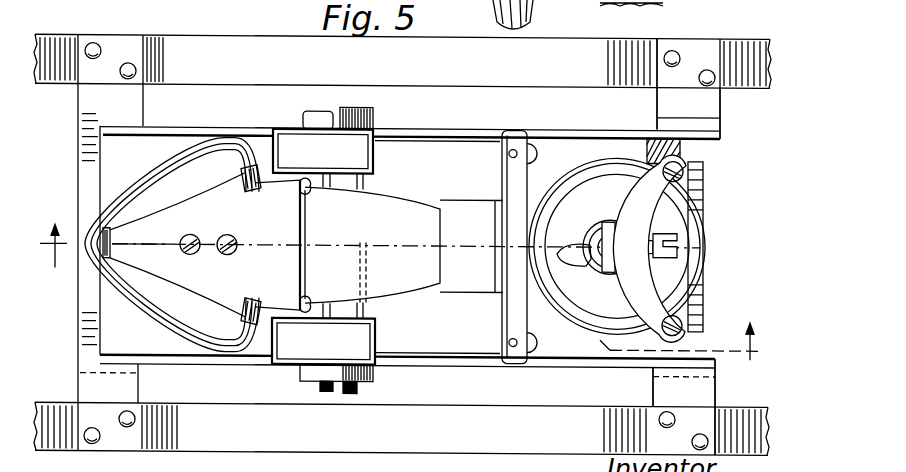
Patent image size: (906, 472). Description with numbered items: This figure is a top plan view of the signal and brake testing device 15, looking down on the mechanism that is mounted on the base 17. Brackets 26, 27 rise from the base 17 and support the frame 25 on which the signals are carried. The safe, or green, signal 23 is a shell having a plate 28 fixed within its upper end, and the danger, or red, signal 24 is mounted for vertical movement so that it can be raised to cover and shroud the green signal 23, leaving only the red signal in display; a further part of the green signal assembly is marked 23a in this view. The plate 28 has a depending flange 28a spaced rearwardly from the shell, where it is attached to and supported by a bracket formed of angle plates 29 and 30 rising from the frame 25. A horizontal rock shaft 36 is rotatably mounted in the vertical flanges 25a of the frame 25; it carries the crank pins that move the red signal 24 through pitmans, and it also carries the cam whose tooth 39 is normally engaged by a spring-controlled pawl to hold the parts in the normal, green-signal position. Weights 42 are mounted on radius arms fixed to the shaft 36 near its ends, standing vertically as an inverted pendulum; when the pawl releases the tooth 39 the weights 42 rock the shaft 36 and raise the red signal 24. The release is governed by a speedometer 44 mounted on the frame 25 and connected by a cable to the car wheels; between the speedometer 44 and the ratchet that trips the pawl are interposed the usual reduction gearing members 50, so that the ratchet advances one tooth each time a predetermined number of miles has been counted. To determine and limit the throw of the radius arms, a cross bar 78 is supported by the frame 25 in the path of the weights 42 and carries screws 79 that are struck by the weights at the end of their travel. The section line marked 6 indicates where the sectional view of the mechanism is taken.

The section line 6- 6 is at (399, 294).
The signal and brake testing device 15 is at (552, 101).
The base 17 is at (268, 443).
The safe signal 23 is at (241, 132).
The spring clamp 23a is at (255, 341).
The danger signal 24 is at (273, 120).
The frame 25 is at (108, 152).
The vertical flange 25a is at (397, 130).
The bracket 26 is at (78, 354).
The bracket 27 is at (700, 101).
The plate 28 is at (277, 225).
The depending flange 28a is at (338, 222).
The angle plate 29 is at (372, 245).
The angle plate 30 is at (460, 204).
The rock shaft 36 is at (360, 182).
The tooth 39 is at (752, 6).
The weight 42 is at (347, 157).
The speedometer 44 is at (597, 205).
The reduction gearing members 50 is at (701, 232).
The cross bar 78 is at (507, 159).
The screw 79 is at (535, 149).